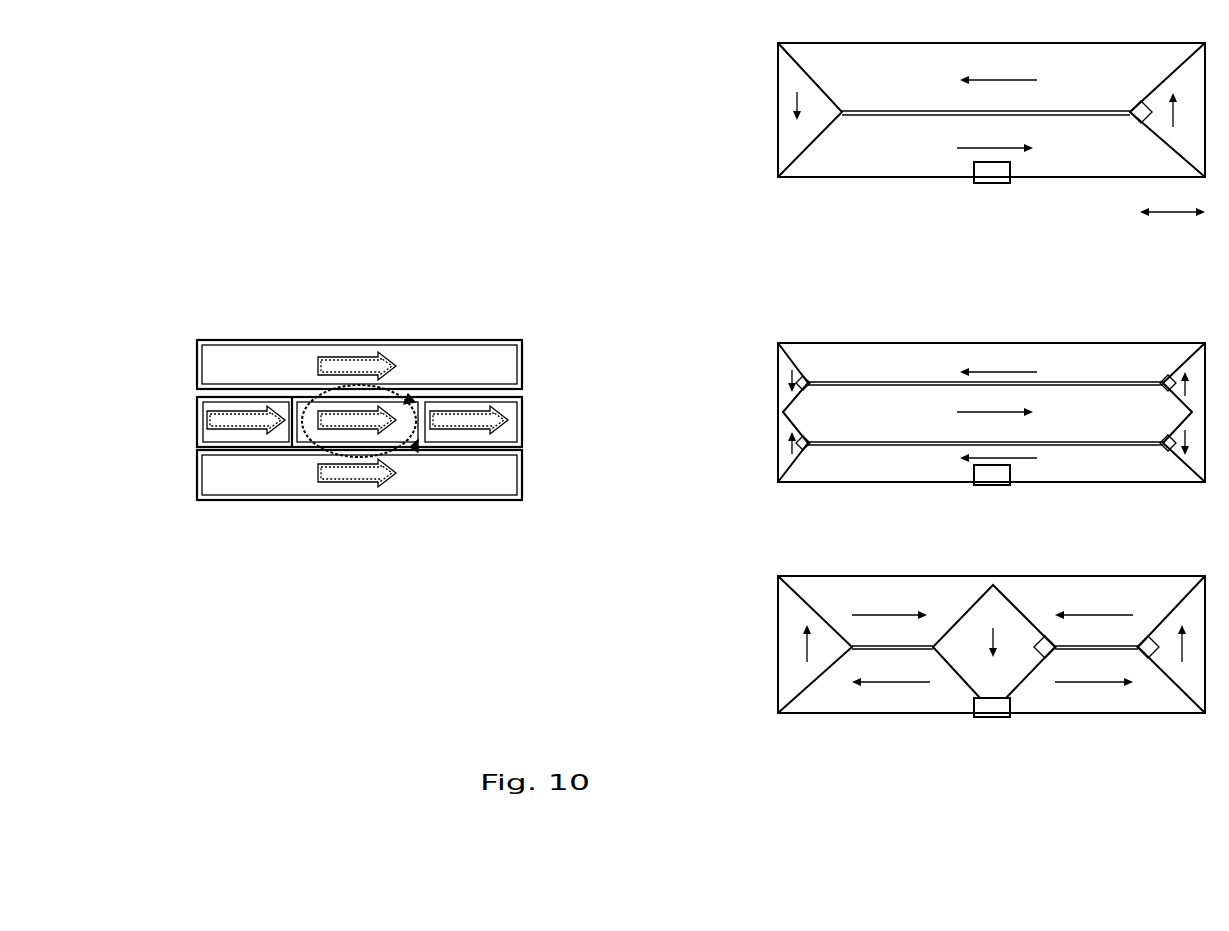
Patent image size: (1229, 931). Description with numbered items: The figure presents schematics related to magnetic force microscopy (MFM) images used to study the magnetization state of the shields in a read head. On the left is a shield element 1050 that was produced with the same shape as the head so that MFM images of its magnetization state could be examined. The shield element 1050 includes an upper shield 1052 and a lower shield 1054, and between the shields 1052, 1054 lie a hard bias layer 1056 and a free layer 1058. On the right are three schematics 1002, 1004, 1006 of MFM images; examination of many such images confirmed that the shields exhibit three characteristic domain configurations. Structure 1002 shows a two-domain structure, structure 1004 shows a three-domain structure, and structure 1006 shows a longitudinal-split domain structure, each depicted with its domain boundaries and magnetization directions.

The shield element 1050 is at (312, 420).
The shield 1052 is at (359, 364).
The shield 1054 is at (359, 475).
The hard bias layer 1056 is at (207, 413).
The free layer 1058 is at (350, 408).
The structure 1002 is at (856, 219).
The structure 1004 is at (856, 511).
The structure 1006 is at (856, 757).